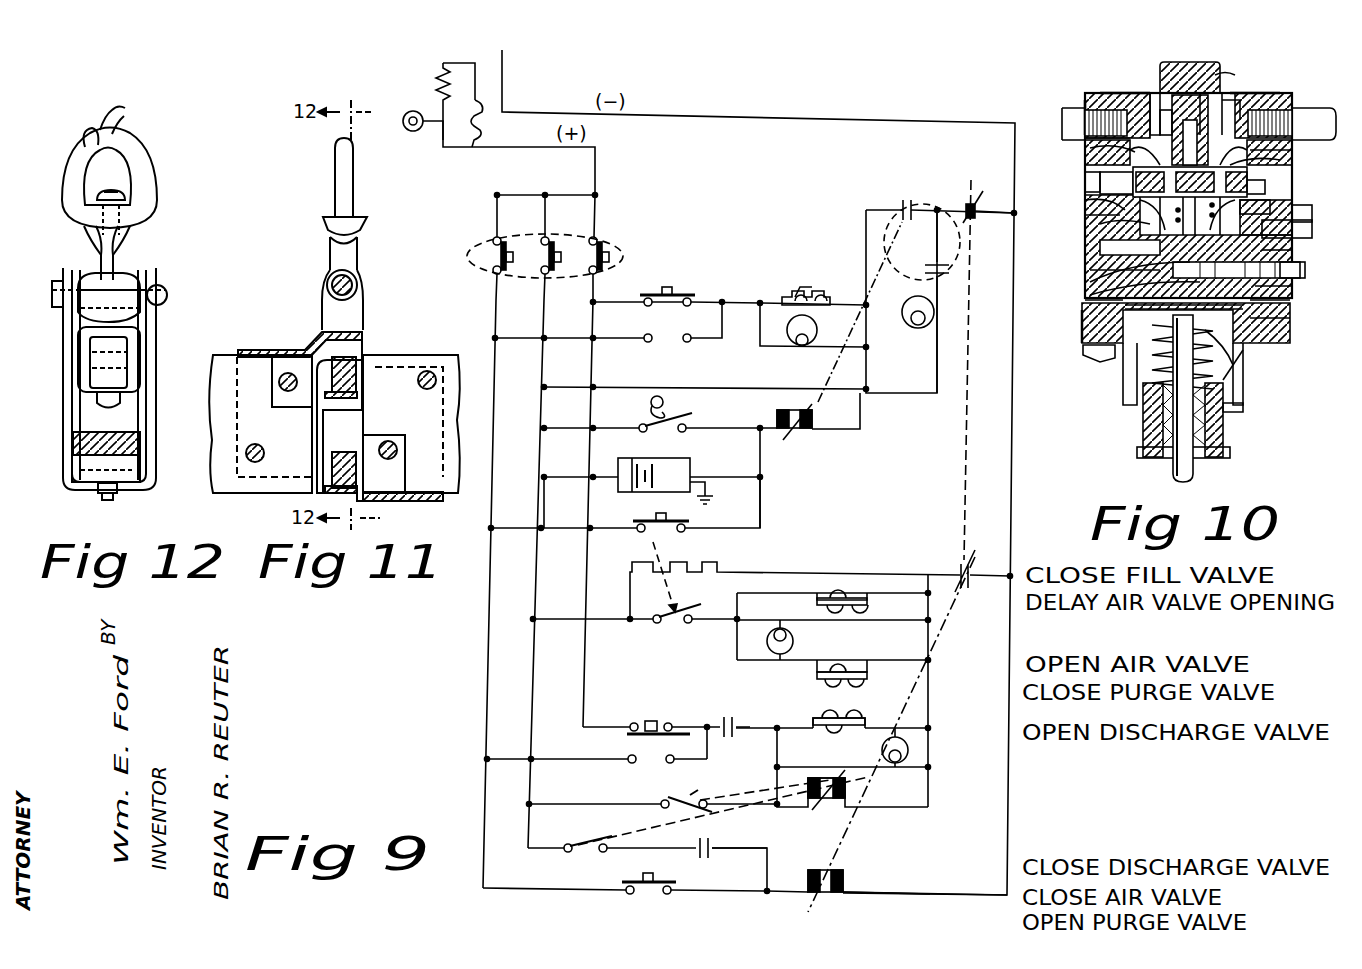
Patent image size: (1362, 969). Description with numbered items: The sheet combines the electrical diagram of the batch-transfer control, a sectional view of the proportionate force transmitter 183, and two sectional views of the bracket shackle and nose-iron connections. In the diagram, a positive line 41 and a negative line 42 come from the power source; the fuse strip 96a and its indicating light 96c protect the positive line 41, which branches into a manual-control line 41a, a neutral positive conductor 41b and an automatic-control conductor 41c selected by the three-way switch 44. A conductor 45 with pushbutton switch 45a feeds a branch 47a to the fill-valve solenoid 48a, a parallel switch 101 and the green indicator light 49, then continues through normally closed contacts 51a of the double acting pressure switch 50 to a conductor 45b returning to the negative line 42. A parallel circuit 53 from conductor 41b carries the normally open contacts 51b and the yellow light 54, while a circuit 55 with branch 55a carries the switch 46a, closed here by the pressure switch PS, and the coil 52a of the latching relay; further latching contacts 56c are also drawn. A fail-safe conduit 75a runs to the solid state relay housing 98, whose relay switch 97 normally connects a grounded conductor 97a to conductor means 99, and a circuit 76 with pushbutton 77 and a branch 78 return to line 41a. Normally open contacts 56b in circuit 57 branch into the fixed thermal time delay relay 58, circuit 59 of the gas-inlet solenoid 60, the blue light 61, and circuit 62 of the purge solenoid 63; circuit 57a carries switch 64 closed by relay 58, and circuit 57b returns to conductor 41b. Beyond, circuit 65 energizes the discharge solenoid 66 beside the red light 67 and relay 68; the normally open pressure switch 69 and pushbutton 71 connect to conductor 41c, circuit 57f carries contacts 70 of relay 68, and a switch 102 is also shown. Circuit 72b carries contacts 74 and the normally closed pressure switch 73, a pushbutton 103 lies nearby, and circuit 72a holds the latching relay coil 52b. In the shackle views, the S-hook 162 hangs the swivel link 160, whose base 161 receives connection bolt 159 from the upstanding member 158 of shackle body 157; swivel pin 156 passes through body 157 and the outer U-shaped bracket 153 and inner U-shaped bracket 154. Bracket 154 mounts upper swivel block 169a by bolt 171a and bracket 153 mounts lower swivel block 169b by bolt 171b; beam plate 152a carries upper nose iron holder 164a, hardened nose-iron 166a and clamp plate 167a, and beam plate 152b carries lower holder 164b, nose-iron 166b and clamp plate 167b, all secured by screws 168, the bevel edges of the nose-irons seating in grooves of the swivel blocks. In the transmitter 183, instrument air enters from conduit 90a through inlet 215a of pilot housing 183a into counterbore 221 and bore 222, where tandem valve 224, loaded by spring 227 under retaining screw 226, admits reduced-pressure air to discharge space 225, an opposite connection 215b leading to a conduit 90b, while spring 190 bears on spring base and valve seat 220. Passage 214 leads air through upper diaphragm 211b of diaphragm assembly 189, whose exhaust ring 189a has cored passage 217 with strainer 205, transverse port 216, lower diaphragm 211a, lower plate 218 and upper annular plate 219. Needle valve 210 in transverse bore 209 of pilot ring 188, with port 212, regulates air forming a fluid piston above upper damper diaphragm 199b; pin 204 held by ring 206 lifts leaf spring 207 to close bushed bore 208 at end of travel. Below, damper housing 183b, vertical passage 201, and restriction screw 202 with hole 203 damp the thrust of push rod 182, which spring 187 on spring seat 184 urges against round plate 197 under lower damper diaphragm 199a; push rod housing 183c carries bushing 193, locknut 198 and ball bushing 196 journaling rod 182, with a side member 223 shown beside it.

In FIG. 9, the positive line 41 is at (443, 63).
In FIG. 9, the negative line 42 is at (505, 52).
In FIG. 9, the indicating light 96c is at (403, 118).
In FIG. 9, the fuse strip 96a is at (480, 118).
In FIG. 9, the three-way switch 44 is at (622, 242).
In FIG. 9, the line 41a is at (496, 220).
In FIG. 9, the neutral third positive conductor 41b is at (545, 222).
In FIG. 9, the positive conductor 41c is at (593, 222).
In FIG. 9, the conductor 45 is at (632, 300).
In FIG. 9, the pushbutton switch 45a is at (667, 287).
In FIG. 9, the conductor 45b is at (988, 214).
In FIG. 9, the relay contact 47a is at (812, 287).
In FIG. 9, the relay contact 48a is at (800, 290).
In FIG. 9, the indicator light 49 is at (818, 330).
In FIG. 9, the double acting pressure actuated switch 50 is at (905, 183).
In FIG. 9, the contacts 51a is at (900, 205).
In FIG. 9, the contacts 51b is at (945, 276).
In FIG. 9, the indicating light 54 is at (920, 328).
In FIG. 9, the relay contact 56c is at (966, 200).
In FIG. 9, the holding switch 101 is at (645, 345).
In FIG. 9, the parallel circuit 53 is at (728, 386).
In FIG. 9, the pressure switch PS is at (639, 406).
In FIG. 9, the switch 46a is at (680, 415).
In FIG. 9, the latching relay coil 52a is at (814, 416).
In FIG. 9, the parallel circuit 55 is at (865, 422).
In FIG. 9, the conductor 55a is at (560, 444).
In FIG. 9, the solid state relay housing 98 is at (680, 455).
In FIG. 9, the conductor means 99 is at (645, 462).
In FIG. 9, the relay switch 97 is at (645, 490).
In FIG. 9, the conduit 75a is at (712, 478).
In FIG. 9, the grounded conductor 97a is at (712, 500).
In FIG. 9, the conductor 78 is at (565, 482).
In FIG. 9, the pushbutton switch 77 is at (642, 534).
In FIG. 9, the circuit 76 is at (762, 500).
In FIG. 9, the fixed time delay relay circuit 58 is at (716, 560).
In FIG. 9, the normally open contacts 56b is at (960, 566).
In FIG. 9, the parallel circuit 57 is at (994, 580).
In FIG. 9, the circuit 57b is at (615, 620).
In FIG. 9, the circuit 57a is at (642, 628).
In FIG. 9, the switch 64 is at (684, 604).
In FIG. 9, the solenoid 60 is at (868, 604).
In FIG. 9, the circuit 59 is at (838, 596).
In FIG. 9, the light 61 is at (794, 638).
In FIG. 9, the solenoid 63 is at (815, 672).
In FIG. 9, the circuit 62 is at (828, 680).
In FIG. 9, the circuit 65 is at (845, 716).
In FIG. 9, the solenoid 66 is at (815, 722).
In FIG. 9, the light 67 is at (880, 750).
In FIG. 9, the relay 68 is at (812, 775).
In FIG. 9, the pushbutton switch 71 is at (660, 715).
In FIG. 9, the normally open pressure actuated switch 69 is at (724, 714).
In FIG. 9, the switch 102 is at (598, 765).
In FIG. 9, the circuit 57f is at (615, 808).
In FIG. 9, the contacts 70 is at (682, 800).
In FIG. 9, the normally closed pressure sensitive switch 73 is at (708, 840).
In FIG. 9, the contacts 74 is at (580, 855).
In FIG. 9, the circuit 72b is at (714, 852).
In FIG. 9, the pushbutton switch 103 is at (645, 895).
In FIG. 9, the latching relay coil 52b is at (845, 868).
In FIG. 9, the circuit 72a is at (930, 890).
In FIG. 12, the swivel link 160 is at (168, 150).
In FIG. 12, the S-hook 162 is at (127, 117).
In FIG. 12, the connection bolt 159 is at (103, 190).
In FIG. 12, the base 161 is at (128, 205).
In FIG. 11, the base 161 is at (335, 217).
In FIG. 12, the upstanding member 158 is at (118, 255).
In FIG. 11, the upstanding member 158 is at (330, 253).
In FIG. 12, the shackle body 157 is at (90, 278).
In FIG. 12, the swivel pin 156 is at (160, 285).
In FIG. 12, the outer U-shaped bracket 153 is at (63, 347).
In FIG. 12, the upper swivel block 169a is at (95, 378).
In FIG. 11, the upper swivel block 169a is at (358, 365).
In FIG. 12, the bolt 171a is at (115, 405).
In FIG. 12, the lower swivel block 169b is at (110, 432).
In FIG. 12, the bolt 171b is at (100, 498).
In FIG. 11, the inner U-shaped bracket 154 is at (352, 305).
In FIG. 11, the beam plate 152a is at (224, 360).
In FIG. 11, the beam plate 152b is at (440, 358).
In FIG. 11, the upper nose iron holder 164a is at (292, 360).
In FIG. 11, the lower nose iron holder 164b is at (410, 500).
In FIG. 11, the upper clamp plate 167a is at (270, 348).
In FIG. 11, the lower clamp plate 167b is at (385, 502).
In FIG. 11, the bolts or screws 168 is at (265, 455).
In FIG. 11, the upper nose-iron 166a is at (356, 380).
In FIG. 11, the lower nose-iron 166b is at (356, 460).
In FIG. 10, the proportionate force transmitter 183 is at (1272, 418).
In FIG. 10, the retaining screw 226 is at (1162, 80).
In FIG. 10, the bore 222 is at (1155, 96).
In FIG. 10, the gasket 215b is at (1120, 94).
In FIG. 10, the pilot housing 183a is at (1082, 102).
In FIG. 10, the inlet port 90b is at (1065, 124).
In FIG. 10, the discharge space 225 is at (1085, 137).
In FIG. 10, the upper diaphragm 211b is at (1100, 152).
In FIG. 10, the diaphragm assembly 189 is at (1078, 176).
In FIG. 10, the transverse port 216 is at (1100, 186).
In FIG. 10, the exhaust ring 189a is at (1090, 204).
In FIG. 10, the lower diaphragm 211a is at (1085, 218).
In FIG. 10, the lower plate 218 is at (1105, 226).
In FIG. 10, the bushed bore 208 is at (1100, 250).
In FIG. 10, the upper damper diaphragm 199b is at (1090, 270).
In FIG. 10, the leaf spring 207 is at (1090, 282).
In FIG. 10, the ring 206 is at (1090, 295).
In FIG. 10, the pin 204 is at (1085, 302).
In FIG. 10, the damper housing 183b is at (1090, 322).
In FIG. 10, the lug 223 is at (1083, 348).
In FIG. 10, the spring 187 is at (1150, 378).
In FIG. 10, the locknut 198 is at (1143, 410).
In FIG. 10, the ball bushing 196 is at (1150, 428).
In FIG. 10, the bushing 193 is at (1138, 455).
In FIG. 10, the push rod 182 is at (1200, 470).
In FIG. 10, the push rod housing 183c is at (1252, 411).
In FIG. 10, the spring seat 184 is at (1245, 365).
In FIG. 10, the round plate 197 is at (1230, 340).
In FIG. 10, the lower damper diaphragm 199a is at (1250, 330).
In FIG. 10, the vertical passage 201 is at (1275, 318).
In FIG. 10, the transverse hole 203 is at (1275, 300).
In FIG. 10, the restriction screw 202 is at (1275, 286).
In FIG. 10, the pilot ring 188 is at (1306, 269).
In FIG. 10, the transverse bore 209 is at (1292, 250).
In FIG. 10, the needle valve 210 is at (1300, 230).
In FIG. 10, the port 212 is at (1305, 214).
In FIG. 10, the screen or strainer 205 is at (1270, 204).
In FIG. 10, the cored passage 217 is at (1265, 186).
In FIG. 10, the upper annular plate 219 is at (1265, 162).
In FIG. 10, the spring base and valve seat 220 is at (1292, 150).
In FIG. 10, the conduit 90a is at (1315, 122).
In FIG. 10, the inlet 215a is at (1262, 94).
In FIG. 10, the passage 214 is at (1232, 102).
In FIG. 10, the spring 190 is at (1230, 80).
In FIG. 10, the vertical counterbore 221 is at (1225, 110).
In FIG. 10, the tandem valve 224 is at (1205, 105).
In FIG. 10, the spring 227 is at (1205, 100).